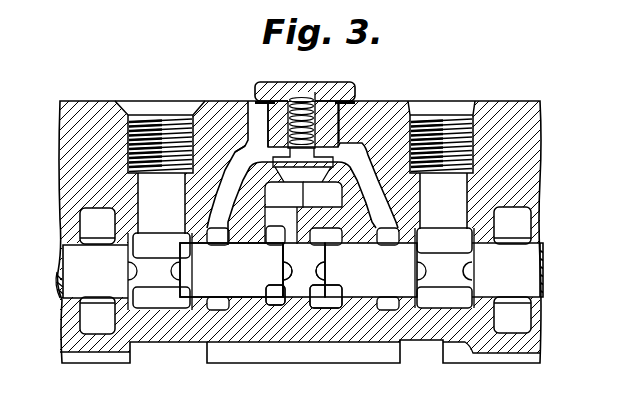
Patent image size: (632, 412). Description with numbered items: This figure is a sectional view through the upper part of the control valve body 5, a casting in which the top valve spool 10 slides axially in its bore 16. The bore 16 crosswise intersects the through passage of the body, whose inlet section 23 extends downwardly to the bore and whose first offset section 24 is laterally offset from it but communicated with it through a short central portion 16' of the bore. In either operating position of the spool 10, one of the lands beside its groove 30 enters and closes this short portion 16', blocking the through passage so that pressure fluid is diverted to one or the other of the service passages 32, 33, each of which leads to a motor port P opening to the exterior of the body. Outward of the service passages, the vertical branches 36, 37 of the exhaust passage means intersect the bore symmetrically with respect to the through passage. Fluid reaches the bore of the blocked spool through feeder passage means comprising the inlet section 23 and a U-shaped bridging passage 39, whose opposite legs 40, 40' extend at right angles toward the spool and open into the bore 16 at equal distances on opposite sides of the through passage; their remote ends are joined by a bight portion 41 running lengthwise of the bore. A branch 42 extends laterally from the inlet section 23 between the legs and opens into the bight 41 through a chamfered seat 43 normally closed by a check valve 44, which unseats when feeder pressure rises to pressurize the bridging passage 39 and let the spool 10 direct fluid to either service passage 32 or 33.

The body 5 is at (513, 93).
The top valve spool 10 is at (82, 274).
The bore 16 is at (82, 271).
The short central portion of bore 16' is at (304, 267).
The inlet section 23 is at (264, 306).
The first offset section 24 is at (323, 306).
The groove 30 is at (322, 250).
The service passage 32 is at (166, 256).
The service passage 33 is at (458, 253).
The vertical branch of exhaust passage means 36 is at (75, 308).
The vertical branch of exhaust passage means 37 is at (520, 300).
The U-shaped bridging passage 39 is at (364, 142).
The leg of bridging passage 40 is at (226, 208).
The leg of bridging passage 40' is at (368, 207).
The bight portion 41 is at (257, 153).
The branch 42 is at (277, 213).
The seat 43 is at (281, 170).
The check valve 44 is at (318, 170).
The motor port P is at (168, 127).